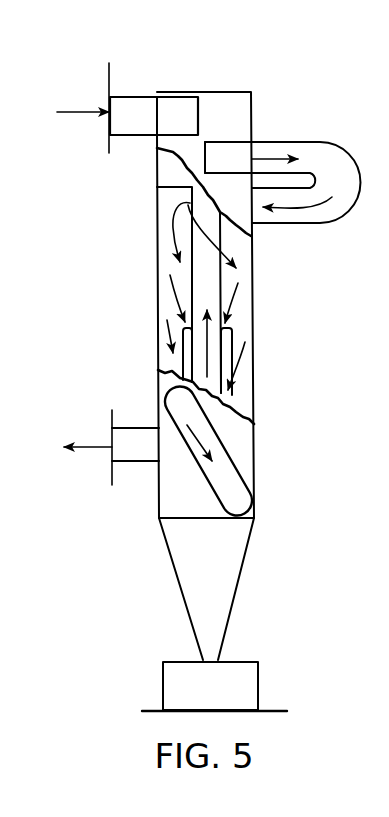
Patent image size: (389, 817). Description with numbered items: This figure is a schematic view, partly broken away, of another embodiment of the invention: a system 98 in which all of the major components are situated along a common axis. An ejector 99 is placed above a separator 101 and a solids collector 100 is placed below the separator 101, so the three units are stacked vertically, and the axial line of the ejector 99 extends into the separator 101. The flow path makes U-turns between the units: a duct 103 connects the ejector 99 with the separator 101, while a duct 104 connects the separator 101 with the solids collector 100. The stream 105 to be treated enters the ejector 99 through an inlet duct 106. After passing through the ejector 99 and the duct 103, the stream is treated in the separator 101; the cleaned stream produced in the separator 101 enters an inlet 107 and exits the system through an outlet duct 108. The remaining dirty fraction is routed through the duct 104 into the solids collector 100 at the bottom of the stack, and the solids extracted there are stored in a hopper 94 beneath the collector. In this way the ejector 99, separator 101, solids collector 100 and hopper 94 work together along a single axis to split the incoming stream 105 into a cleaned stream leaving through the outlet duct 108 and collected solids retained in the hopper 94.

The hopper 94 is at (163, 678).
The system 98 is at (124, 726).
The ejector 99 is at (180, 148).
The solids collector 100 is at (177, 542).
The separator 101 is at (252, 246).
The duct 103 is at (322, 153).
The duct 104 is at (203, 467).
The stream to be treated 105 is at (68, 117).
The inlet duct 106 is at (135, 96).
The inlet 107 is at (217, 303).
The outlet duct 108 is at (112, 432).